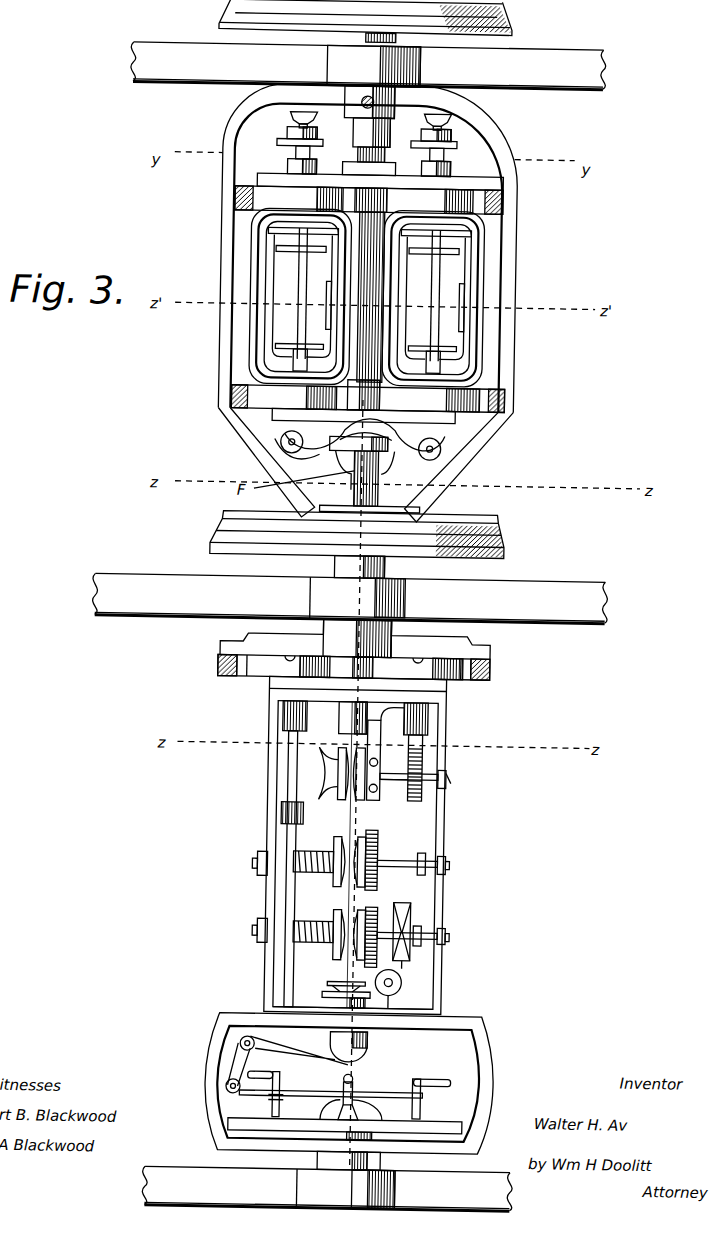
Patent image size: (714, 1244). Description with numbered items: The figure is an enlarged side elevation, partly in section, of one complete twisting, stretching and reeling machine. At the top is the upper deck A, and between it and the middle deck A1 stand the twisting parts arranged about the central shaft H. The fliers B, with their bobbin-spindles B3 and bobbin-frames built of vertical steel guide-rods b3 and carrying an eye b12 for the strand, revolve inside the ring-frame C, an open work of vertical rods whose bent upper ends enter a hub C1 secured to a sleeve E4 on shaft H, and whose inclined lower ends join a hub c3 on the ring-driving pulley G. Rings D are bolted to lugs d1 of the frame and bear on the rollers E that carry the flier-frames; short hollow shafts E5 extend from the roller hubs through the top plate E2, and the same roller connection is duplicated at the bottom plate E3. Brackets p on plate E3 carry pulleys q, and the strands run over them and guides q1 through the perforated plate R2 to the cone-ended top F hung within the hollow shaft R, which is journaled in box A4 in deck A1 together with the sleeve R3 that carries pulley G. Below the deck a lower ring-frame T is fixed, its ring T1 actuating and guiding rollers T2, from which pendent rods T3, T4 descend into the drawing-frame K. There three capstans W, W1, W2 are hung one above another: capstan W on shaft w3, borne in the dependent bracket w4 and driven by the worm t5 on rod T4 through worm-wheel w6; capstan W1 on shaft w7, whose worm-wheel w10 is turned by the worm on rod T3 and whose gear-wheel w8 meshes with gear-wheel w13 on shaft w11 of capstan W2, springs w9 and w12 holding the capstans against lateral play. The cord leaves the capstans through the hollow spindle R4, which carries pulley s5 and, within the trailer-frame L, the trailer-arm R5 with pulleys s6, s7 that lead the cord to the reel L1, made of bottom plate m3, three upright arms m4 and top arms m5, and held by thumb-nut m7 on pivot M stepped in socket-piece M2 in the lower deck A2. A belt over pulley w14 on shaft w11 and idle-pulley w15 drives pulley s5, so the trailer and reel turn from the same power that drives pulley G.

The upper deck A is at (232, 78).
The middle deck A1 is at (412, 598).
The lower deck A2 is at (327, 1188).
The box A4 is at (300, 603).
The flier B is at (245, 327).
The bobbin-spindle B3 is at (303, 352).
The vertical steel guide-rod b3 is at (321, 297).
The eye b12 is at (459, 297).
The ring-frame C is at (215, 275).
The hub C1 is at (336, 90).
The hub c3 is at (398, 515).
The ring D is at (228, 197).
The lug d1 is at (229, 422).
The roller E is at (262, 197).
The top plate E2 is at (493, 184).
The bottom plate E3 is at (437, 426).
The sleeve E4 is at (350, 151).
The short hollow shaft E5 is at (444, 134).
The top F is at (368, 168).
The pulley G is at (368, 534).
The shaft H is at (345, 141).
The drawing-frame K is at (443, 831).
The trailer-frame L is at (500, 1084).
The reel L1 is at (340, 1102).
The pivot M is at (378, 1153).
The socket-piece M2 is at (351, 1189).
The bottom plate m3 is at (344, 1118).
The upright arm m4 is at (344, 1090).
The top horizontal arm m5 is at (349, 1070).
The thumb-nut m7 is at (356, 1110).
The bracket p is at (359, 442).
The pulley q is at (329, 453).
The guide q1 is at (358, 480).
The hollow shaft R is at (364, 446).
The plate R2 is at (279, 457).
The sleeve R3 is at (334, 570).
The hollow spindle R4 is at (409, 984).
The trailer-arm R5 is at (376, 1042).
The pulley s5 is at (332, 995).
The pulley s6 is at (255, 1038).
The pulley s7 is at (234, 1090).
The lower ring-frame T is at (244, 643).
The ring T1 is at (219, 667).
The roller T2 is at (259, 673).
The pendent rod T3 is at (285, 729).
The pendent rod T4 is at (425, 750).
The worm t5 is at (420, 764).
The capstan W is at (341, 789).
The capstan W1 is at (340, 849).
The capstan W2 is at (339, 953).
The shaft w3 is at (398, 781).
The dependent bracket w4 is at (384, 723).
The worm-wheel w6 is at (450, 775).
The shaft w7 is at (404, 853).
The gear-wheel w8 is at (382, 881).
The spring w9 is at (309, 875).
The worm-wheel w10 is at (289, 873).
The shaft w11 is at (305, 941).
The spring w12 is at (268, 921).
The gear-wheel w13 is at (381, 916).
The pulley w14 is at (416, 959).
The idle-pulley w15 is at (442, 1007).